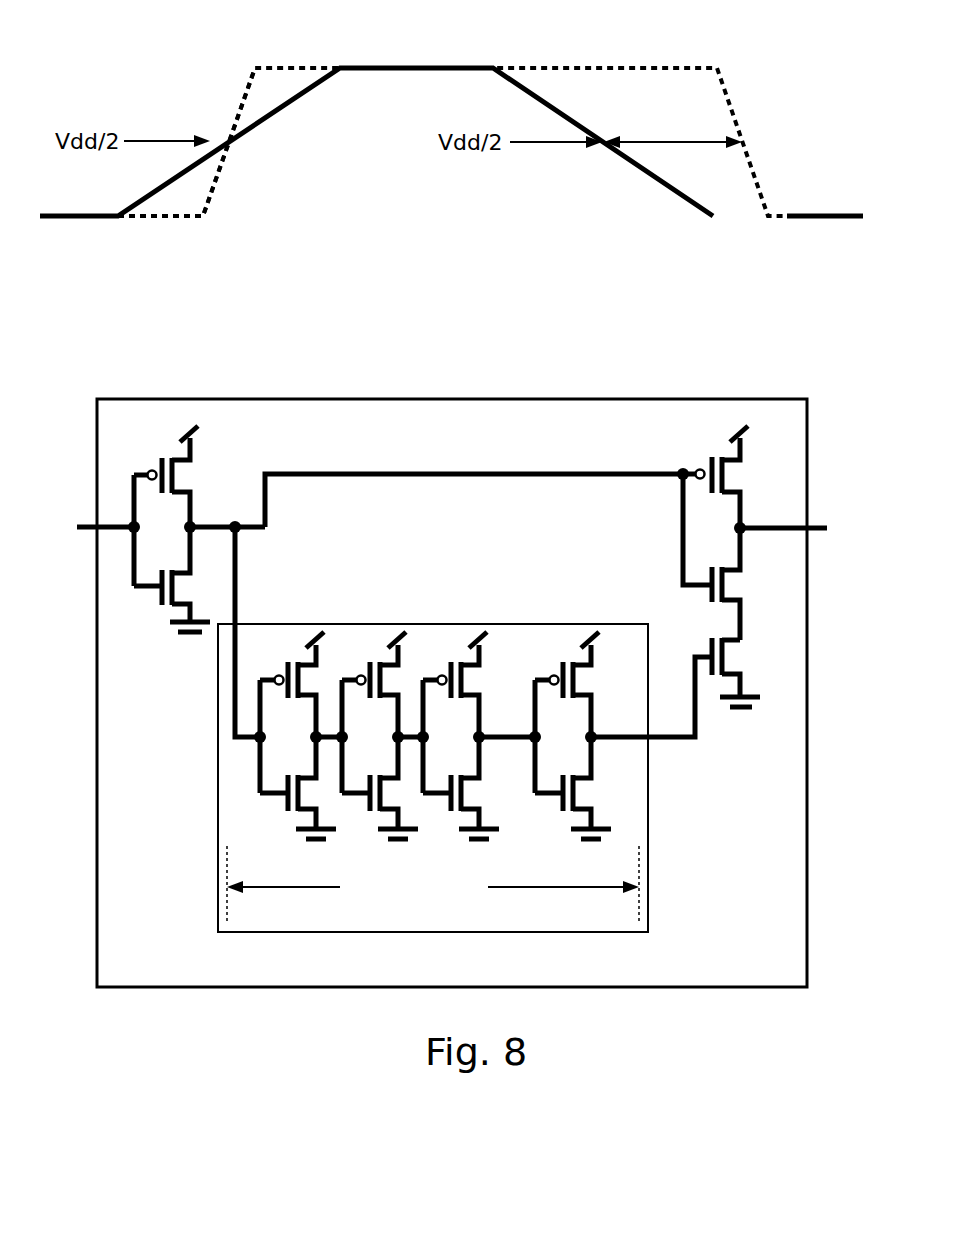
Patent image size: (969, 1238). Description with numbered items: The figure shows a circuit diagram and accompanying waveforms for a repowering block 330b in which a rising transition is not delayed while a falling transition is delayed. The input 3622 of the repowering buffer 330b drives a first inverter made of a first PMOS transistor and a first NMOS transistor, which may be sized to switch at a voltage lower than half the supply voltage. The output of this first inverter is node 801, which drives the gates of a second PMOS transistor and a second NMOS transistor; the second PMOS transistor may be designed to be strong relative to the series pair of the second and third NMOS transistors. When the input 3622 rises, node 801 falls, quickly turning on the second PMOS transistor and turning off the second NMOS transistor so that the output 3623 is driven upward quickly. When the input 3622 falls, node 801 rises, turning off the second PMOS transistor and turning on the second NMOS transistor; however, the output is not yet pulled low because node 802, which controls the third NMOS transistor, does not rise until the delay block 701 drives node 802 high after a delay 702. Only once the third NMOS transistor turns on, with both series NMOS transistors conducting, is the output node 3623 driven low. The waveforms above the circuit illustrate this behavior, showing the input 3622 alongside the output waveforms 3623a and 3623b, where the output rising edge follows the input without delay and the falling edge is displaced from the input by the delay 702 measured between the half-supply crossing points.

The input 3622 is at (288, 103).
The output node 3623 is at (817, 531).
The output signal waveform 3623a is at (200, 95).
The output signal waveform 3623b is at (245, 92).
The delay 702 is at (703, 142).
The delay block 701 is at (435, 623).
The node 801 is at (402, 473).
The node 802 is at (698, 717).
The repowering block 330b is at (705, 978).